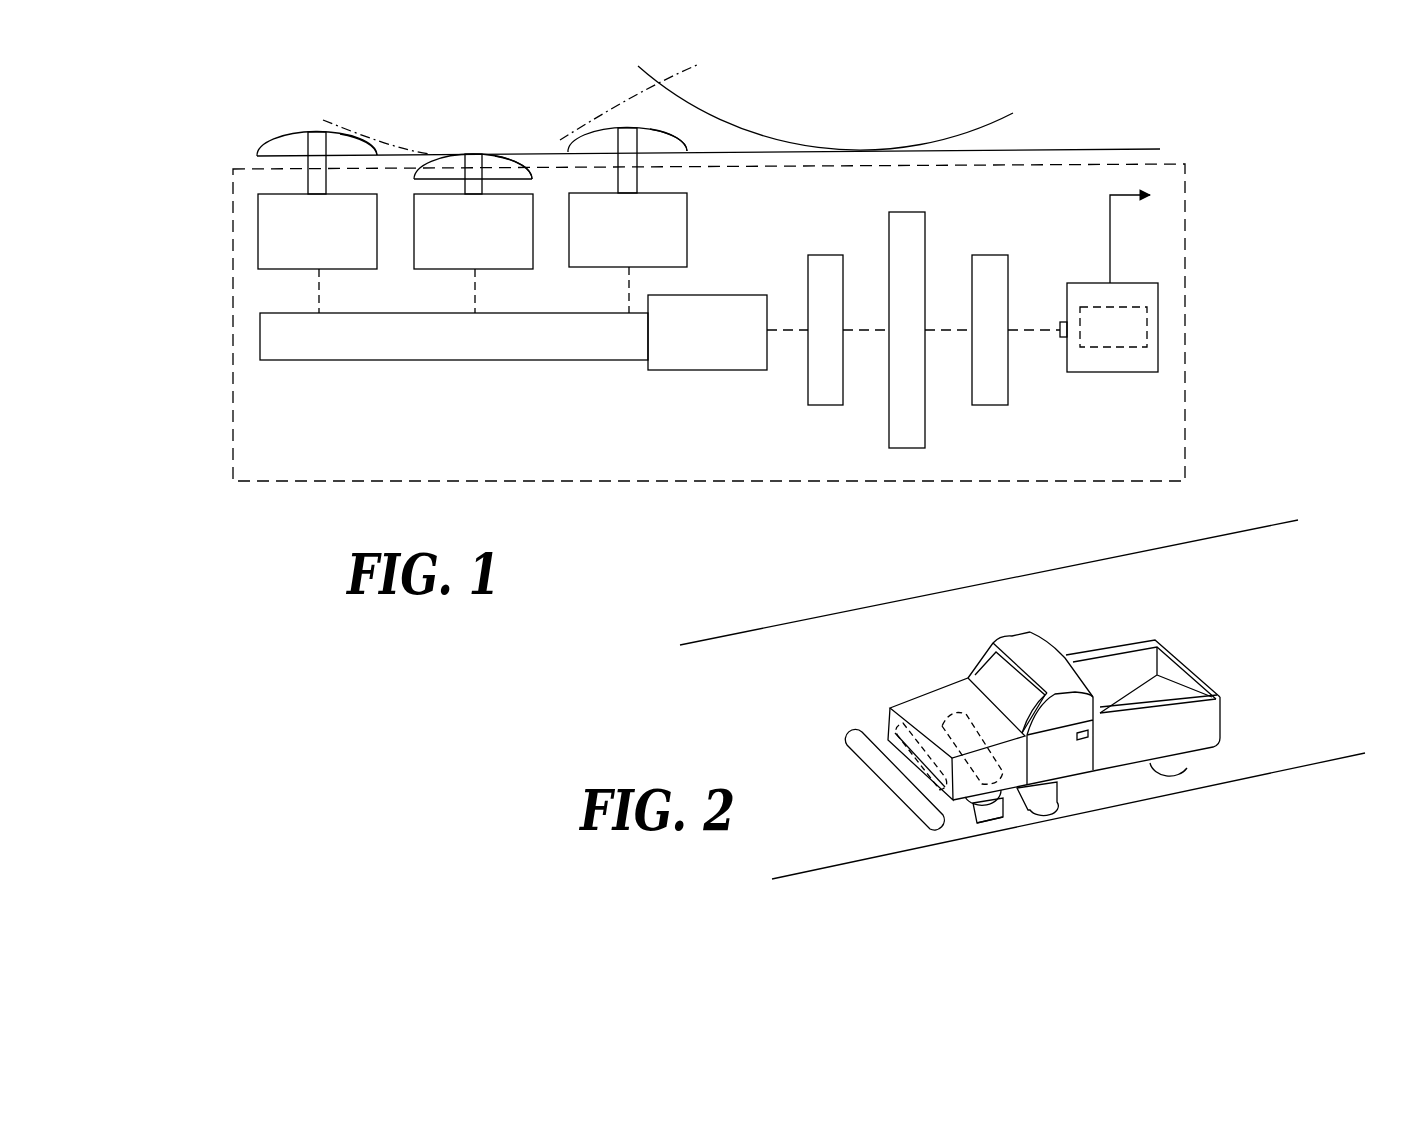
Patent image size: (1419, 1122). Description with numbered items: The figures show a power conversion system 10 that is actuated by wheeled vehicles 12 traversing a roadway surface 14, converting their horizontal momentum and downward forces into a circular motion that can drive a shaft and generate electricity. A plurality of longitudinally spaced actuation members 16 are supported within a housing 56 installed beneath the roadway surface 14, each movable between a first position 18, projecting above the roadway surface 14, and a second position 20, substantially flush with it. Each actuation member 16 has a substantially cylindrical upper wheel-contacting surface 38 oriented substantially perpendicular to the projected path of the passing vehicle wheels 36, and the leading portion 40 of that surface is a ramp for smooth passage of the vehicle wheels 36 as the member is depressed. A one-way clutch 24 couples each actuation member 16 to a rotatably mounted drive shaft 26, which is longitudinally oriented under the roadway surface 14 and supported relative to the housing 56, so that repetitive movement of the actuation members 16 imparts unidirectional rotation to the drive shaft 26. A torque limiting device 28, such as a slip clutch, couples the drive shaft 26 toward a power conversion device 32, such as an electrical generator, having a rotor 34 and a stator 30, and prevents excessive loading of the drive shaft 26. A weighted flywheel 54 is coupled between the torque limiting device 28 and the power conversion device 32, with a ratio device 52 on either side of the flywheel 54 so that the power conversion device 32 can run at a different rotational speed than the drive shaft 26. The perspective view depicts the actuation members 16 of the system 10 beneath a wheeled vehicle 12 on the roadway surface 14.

In FIG. 1, the power conversion system 10 is at (741, 509).
In FIG. 2, the power conversion system 10 is at (1187, 849).
In FIG. 2, the wheeled vehicle 12 is at (1070, 739).
In FIG. 1, the roadway surface 14 is at (1045, 149).
In FIG. 2, the roadway surface 14 is at (1225, 572).
In FIG. 1, the actuation member 16 is at (480, 124).
In FIG. 2, the actuation member 16 is at (954, 779).
In FIG. 1, the first position 18 is at (273, 149).
In FIG. 2, the first position 18 is at (887, 777).
In FIG. 1, the second position 20 is at (530, 158).
In FIG. 2, the second position 20 is at (999, 824).
In FIG. 1, the one-way clutch 24 is at (343, 270).
In FIG. 1, the drive shaft 26 is at (360, 362).
In FIG. 1, the torque limiting device 28 is at (715, 372).
In FIG. 1, the stator 30 is at (1088, 307).
In FIG. 1, the power conversion device 32 is at (1095, 308).
In FIG. 1, the rotor 34 is at (1062, 337).
In FIG. 1, the vehicle wheel 36 is at (697, 66).
In FIG. 2, the vehicle wheel 36 is at (1192, 777).
In FIG. 1, the wheel-contacting surface 38 is at (308, 132).
In FIG. 2, the wheel-contacting surface 38 is at (928, 822).
In FIG. 1, the leading portion 40 is at (363, 137).
In FIG. 1, the ratio device 52 is at (820, 405).
In FIG. 1, the flywheel 54 is at (925, 240).
In FIG. 1, the housing 56 is at (315, 483).